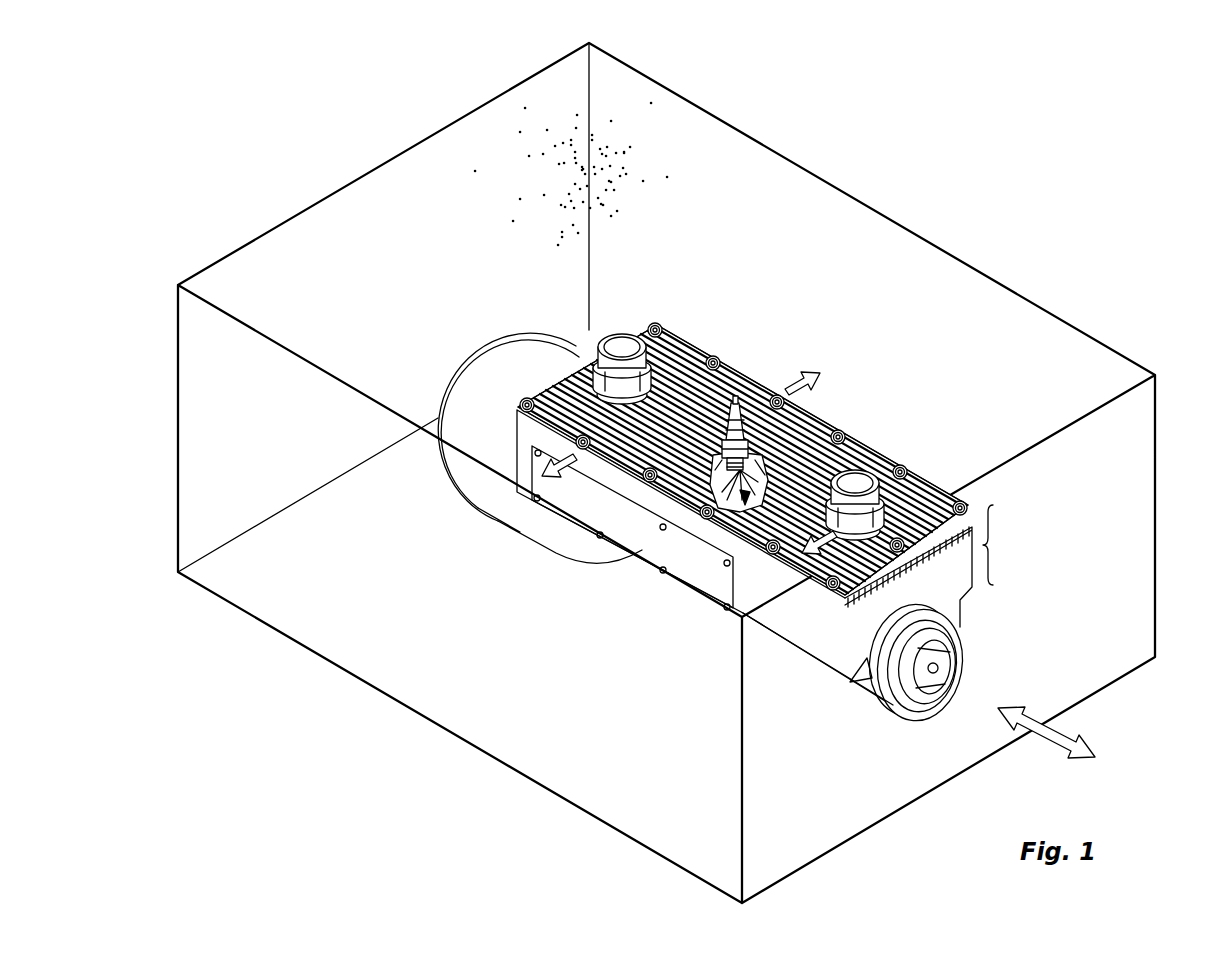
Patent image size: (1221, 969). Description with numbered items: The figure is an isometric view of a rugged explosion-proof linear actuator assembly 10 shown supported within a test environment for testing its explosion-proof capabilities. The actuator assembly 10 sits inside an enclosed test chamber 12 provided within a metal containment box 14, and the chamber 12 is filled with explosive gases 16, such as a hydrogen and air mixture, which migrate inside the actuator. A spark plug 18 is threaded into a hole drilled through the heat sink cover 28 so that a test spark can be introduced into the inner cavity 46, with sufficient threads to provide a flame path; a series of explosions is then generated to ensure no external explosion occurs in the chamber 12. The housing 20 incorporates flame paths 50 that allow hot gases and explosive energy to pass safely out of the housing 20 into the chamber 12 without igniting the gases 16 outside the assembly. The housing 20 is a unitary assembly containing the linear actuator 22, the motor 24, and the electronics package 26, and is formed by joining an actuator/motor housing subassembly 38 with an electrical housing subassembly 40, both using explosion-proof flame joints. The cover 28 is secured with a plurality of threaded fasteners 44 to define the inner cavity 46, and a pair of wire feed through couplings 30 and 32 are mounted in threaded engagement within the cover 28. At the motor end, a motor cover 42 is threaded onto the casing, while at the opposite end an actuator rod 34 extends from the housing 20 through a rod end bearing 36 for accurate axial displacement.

The linear actuator assembly 10 is at (620, 615).
The test chamber 12 is at (1135, 483).
The metal containment box 14 is at (911, 223).
The explosive gases 16 is at (618, 162).
The spark plug 18 is at (737, 398).
The housing 20 is at (712, 512).
The linear actuator 22 is at (858, 702).
The motor 24 is at (518, 525).
The electronics package 26 is at (512, 440).
The heat sink cover 28 is at (822, 425).
The wire feed through coupling 30 is at (625, 335).
The wire feed through coupling 32 is at (884, 478).
The actuator rod 34 is at (935, 663).
The rod end bearing 36 is at (946, 641).
The actuator/motor housing subassembly 38 is at (477, 403).
The electrical housing subassembly 40 is at (1009, 545).
The motor cover 42 is at (517, 337).
The threaded fasteners 44 is at (713, 358).
The inner cavity 46 is at (765, 525).
The flame paths 50 is at (816, 370).